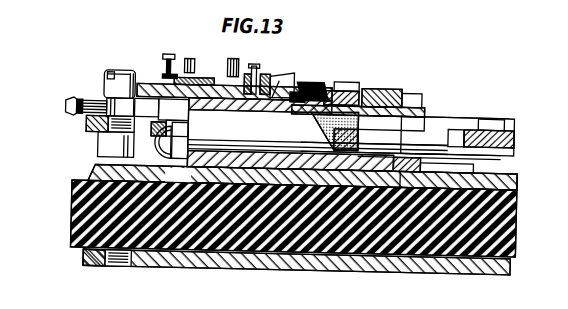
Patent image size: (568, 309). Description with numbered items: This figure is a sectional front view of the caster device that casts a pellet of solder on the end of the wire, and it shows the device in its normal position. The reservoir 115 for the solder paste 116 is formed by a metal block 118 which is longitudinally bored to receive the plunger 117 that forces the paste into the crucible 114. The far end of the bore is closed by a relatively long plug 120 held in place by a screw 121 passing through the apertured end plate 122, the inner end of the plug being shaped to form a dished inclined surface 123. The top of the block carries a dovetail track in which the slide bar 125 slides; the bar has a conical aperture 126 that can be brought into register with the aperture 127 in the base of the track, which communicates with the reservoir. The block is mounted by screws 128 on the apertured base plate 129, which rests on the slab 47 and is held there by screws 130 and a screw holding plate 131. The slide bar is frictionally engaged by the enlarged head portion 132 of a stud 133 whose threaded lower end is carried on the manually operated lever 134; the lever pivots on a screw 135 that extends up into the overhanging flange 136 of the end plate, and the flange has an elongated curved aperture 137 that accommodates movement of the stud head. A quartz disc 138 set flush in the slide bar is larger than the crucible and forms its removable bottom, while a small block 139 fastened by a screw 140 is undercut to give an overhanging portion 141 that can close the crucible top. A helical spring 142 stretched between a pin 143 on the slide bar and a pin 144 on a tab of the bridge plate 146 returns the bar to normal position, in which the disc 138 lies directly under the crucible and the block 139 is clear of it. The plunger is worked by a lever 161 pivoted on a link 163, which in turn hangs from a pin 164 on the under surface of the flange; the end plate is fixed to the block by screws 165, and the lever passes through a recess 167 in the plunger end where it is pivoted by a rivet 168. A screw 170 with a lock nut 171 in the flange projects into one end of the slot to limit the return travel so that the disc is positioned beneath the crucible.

The slab 47 is at (517, 185).
The crucible 114 is at (327, 82).
The reservoir 115 is at (361, 83).
The solder paste 116 is at (356, 121).
The plunger 117 is at (430, 110).
The block 118 is at (422, 108).
The plug 120 is at (234, 103).
The screw 121 is at (302, 178).
The end plate 122 is at (190, 136).
The dished inclined surface 123 is at (356, 132).
The slide bar 125 is at (405, 86).
The conical aperture 126 is at (293, 97).
The aperture 127 is at (340, 77).
The screws 128 is at (398, 158).
The base plate 129 is at (472, 170).
The screws 130 is at (112, 262).
The screw holding plate 131 is at (190, 262).
The enlarged head portion 132 is at (118, 70).
The stud 133 is at (85, 122).
The lever 134 is at (88, 131).
The screw 135 is at (98, 146).
The overhanging flange 136 is at (101, 97).
The elongated curved aperture 137 is at (141, 97).
The disc 138 is at (333, 133).
The small block 139 is at (277, 76).
The screw 140 is at (290, 70).
The overhanging portion 141 is at (300, 75).
The helical spring 142 is at (187, 56).
The pin 143 is at (252, 60).
The pin 144 is at (168, 49).
The bridge plate 146 is at (208, 75).
The lever 161 is at (503, 120).
The link 163 is at (156, 132).
The pin 164 is at (187, 118).
The screws 165 is at (160, 155).
The recess 167 is at (447, 125).
The rivet 168 is at (477, 121).
The screw 170 is at (70, 100).
The lock nut 171 is at (82, 95).